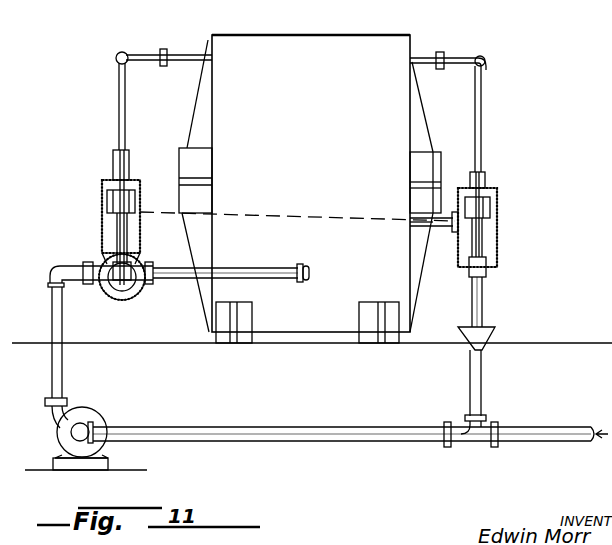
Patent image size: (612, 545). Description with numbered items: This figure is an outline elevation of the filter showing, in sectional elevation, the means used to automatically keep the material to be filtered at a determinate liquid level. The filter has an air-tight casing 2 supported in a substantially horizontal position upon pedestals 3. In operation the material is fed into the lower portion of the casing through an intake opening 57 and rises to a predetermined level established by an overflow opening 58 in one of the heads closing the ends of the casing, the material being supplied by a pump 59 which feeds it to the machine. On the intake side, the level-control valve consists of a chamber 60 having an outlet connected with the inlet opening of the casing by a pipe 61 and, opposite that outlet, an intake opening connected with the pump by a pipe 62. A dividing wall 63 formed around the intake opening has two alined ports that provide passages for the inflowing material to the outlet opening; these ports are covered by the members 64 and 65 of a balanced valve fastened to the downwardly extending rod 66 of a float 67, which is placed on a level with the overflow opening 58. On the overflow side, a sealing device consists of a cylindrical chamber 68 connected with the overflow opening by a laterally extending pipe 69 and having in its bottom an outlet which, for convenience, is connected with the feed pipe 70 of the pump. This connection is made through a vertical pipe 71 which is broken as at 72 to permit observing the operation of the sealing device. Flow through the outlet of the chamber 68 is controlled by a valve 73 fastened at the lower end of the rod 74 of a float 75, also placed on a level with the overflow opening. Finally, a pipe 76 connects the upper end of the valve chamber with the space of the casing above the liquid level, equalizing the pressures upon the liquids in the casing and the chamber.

The air-tight casing 2 is at (297, 183).
The pedestals 3 is at (253, 315).
The intake opening 57 is at (306, 265).
The overflow opening 58 is at (409, 222).
The pump 59 is at (100, 410).
The chamber 60 is at (130, 229).
The pipe 61 is at (222, 267).
The pipe 62 is at (52, 315).
The dividing wall 63 is at (110, 292).
The valve member 64 is at (132, 292).
The valve member 65 is at (131, 263).
The rod 66 is at (116, 237).
The float 67 is at (105, 203).
The cylindrical chamber 68 is at (488, 241).
The laterally extending pipe 69 is at (443, 228).
The feed pipe 70 is at (329, 424).
The vertical pipe 71 is at (472, 296).
The break 72 is at (483, 326).
The valve 73 is at (498, 258).
The rod 74 is at (482, 231).
The float 75 is at (494, 203).
The pipe 76 is at (481, 118).